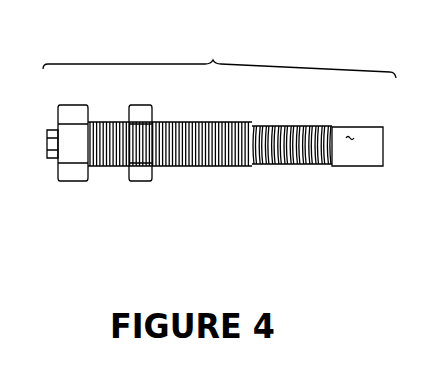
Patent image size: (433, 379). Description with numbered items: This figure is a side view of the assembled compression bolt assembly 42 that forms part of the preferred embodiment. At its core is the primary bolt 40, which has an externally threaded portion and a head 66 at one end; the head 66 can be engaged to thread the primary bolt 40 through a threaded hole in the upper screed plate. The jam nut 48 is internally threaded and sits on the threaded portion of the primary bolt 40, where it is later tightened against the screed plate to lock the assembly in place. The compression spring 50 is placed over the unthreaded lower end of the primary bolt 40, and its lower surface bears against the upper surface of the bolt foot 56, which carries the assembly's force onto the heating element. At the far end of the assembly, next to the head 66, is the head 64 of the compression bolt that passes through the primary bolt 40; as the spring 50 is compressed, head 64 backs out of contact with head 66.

The compression bolt assembly 42 is at (219, 51).
The primary bolt 40 is at (192, 160).
The jam nut 48 is at (144, 149).
The compression spring 50 is at (280, 166).
The bolt foot 56 is at (368, 138).
The head 64 is at (50, 151).
The head 66 is at (70, 182).